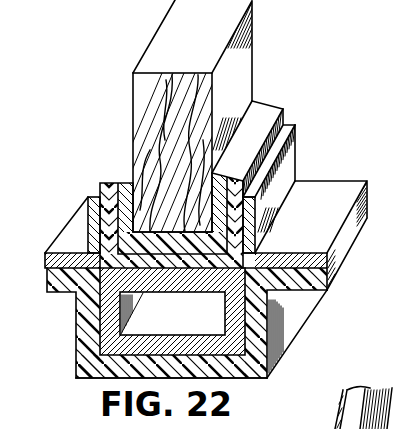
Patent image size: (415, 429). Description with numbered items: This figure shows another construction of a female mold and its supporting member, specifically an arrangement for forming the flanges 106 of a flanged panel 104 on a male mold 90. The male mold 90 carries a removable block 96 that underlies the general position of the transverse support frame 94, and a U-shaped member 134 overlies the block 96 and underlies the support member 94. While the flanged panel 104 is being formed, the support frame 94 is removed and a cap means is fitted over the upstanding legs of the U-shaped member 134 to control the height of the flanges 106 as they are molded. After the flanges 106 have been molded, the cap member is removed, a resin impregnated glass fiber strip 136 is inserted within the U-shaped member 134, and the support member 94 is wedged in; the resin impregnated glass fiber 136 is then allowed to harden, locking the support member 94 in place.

The male mold 90 is at (285, 312).
The support frame 94 is at (198, 49).
The removable block 96 is at (223, 378).
The flanged section 104 is at (67, 247).
The extending flange 106 is at (288, 167).
The U-shaped member 134 is at (272, 118).
The resin impregnated glass fiber strip 136 is at (250, 120).